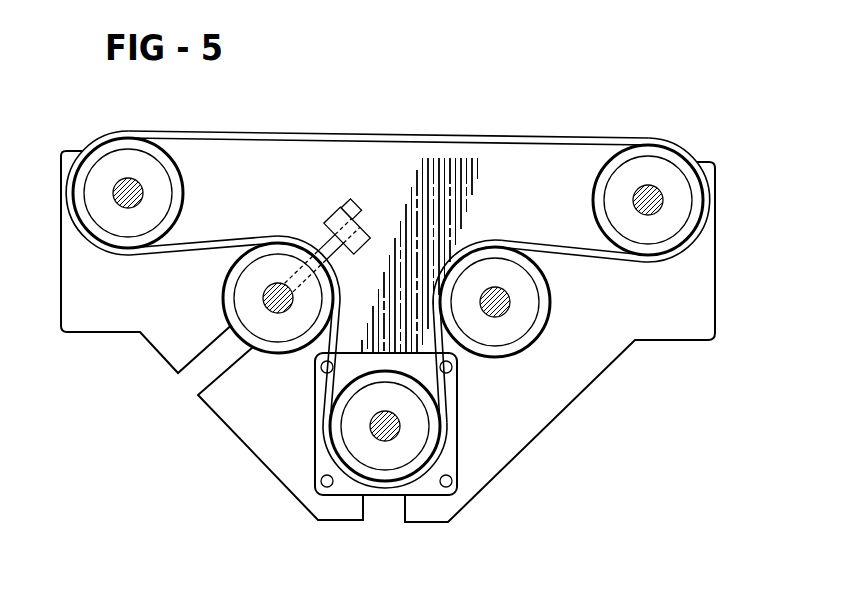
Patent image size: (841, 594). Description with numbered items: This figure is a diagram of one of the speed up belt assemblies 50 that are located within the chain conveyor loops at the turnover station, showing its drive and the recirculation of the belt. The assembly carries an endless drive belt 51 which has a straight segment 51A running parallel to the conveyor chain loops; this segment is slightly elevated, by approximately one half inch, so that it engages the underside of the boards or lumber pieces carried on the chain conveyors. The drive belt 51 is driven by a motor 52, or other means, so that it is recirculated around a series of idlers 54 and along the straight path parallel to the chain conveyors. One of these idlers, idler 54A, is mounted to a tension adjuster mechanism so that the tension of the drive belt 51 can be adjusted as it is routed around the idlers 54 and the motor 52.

The speed up belt assembly 50 is at (181, 432).
The endless drive belt 51 is at (388, 272).
The straight segment 51A is at (370, 133).
The motor 52 is at (353, 429).
The idler 54 is at (106, 153).
The idler 54A is at (229, 272).